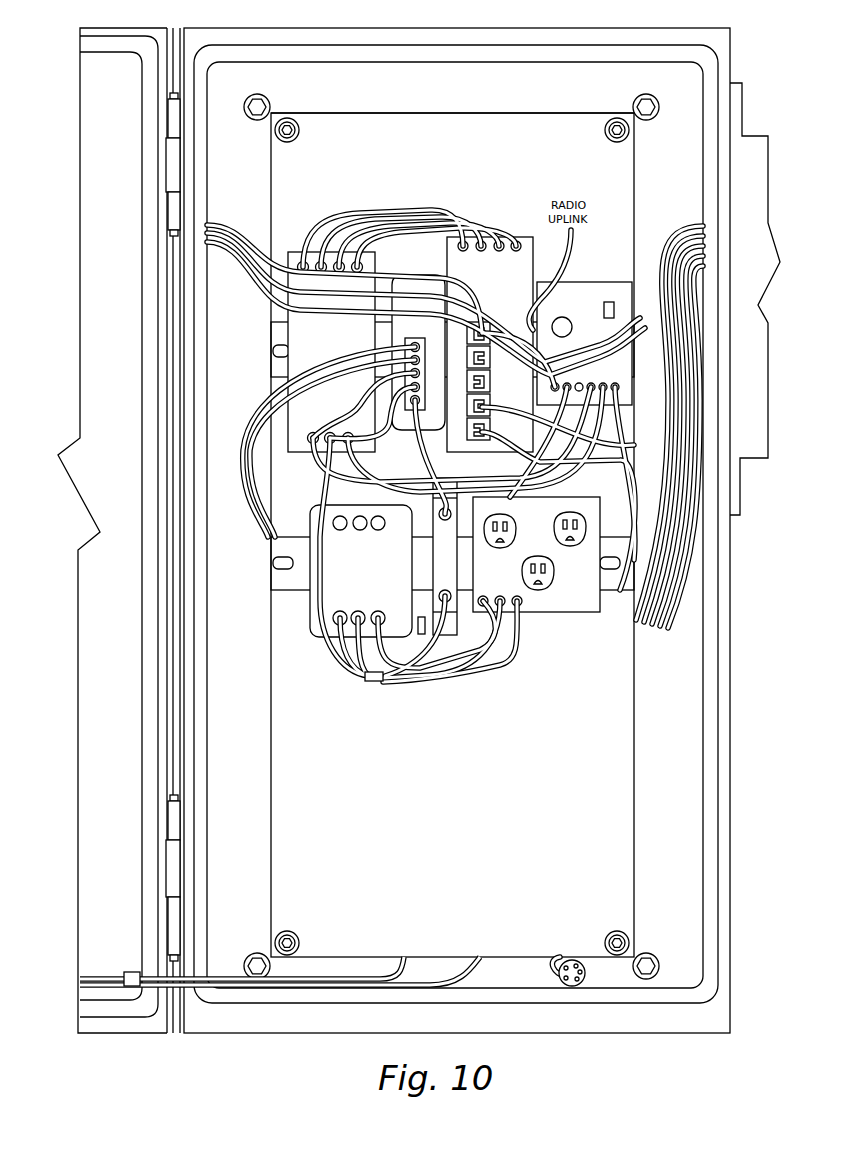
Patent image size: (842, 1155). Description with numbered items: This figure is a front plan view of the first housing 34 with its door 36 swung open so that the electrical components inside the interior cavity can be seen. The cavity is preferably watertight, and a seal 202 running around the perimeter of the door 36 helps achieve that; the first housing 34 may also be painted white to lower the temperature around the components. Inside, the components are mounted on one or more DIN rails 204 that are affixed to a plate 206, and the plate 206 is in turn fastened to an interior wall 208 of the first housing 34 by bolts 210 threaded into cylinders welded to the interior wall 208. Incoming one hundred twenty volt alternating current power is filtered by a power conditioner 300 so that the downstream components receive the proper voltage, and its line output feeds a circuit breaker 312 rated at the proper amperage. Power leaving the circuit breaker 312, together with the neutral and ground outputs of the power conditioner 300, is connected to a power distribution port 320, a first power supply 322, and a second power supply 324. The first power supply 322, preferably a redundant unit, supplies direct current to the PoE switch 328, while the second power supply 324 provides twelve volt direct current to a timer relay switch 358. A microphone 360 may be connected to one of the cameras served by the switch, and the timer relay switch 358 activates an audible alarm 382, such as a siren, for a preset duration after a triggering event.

The first housing 34 is at (746, 62).
The door 36 is at (80, 300).
The seal 202 is at (142, 114).
The DIN rails 204 is at (277, 358).
The plate 206 is at (462, 171).
The interior wall 208 is at (459, 105).
The bolts 210 is at (300, 138).
The power conditioner 300 is at (379, 583).
The circuit breaker 312 is at (450, 548).
The power distribution port 320 is at (589, 599).
The first power supply 322 is at (347, 342).
The second power supply 324 is at (414, 282).
The PoE switch 328 is at (506, 284).
The timer relay switch 358 is at (611, 344).
The microphone 360 is at (574, 960).
The audible alarm 382 is at (43, 952).